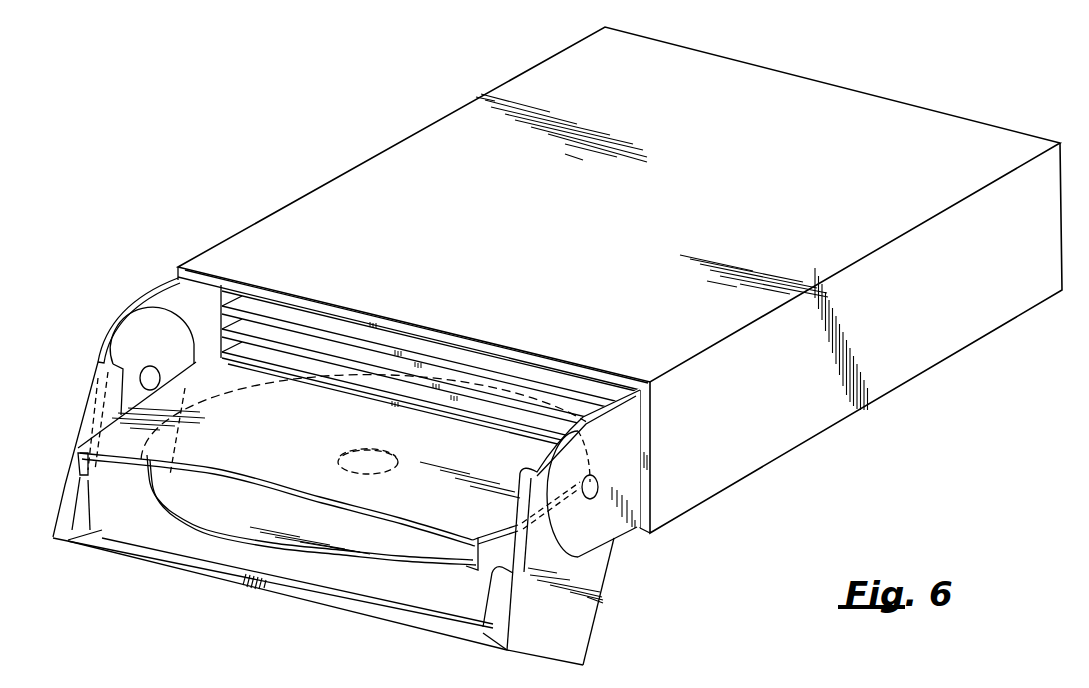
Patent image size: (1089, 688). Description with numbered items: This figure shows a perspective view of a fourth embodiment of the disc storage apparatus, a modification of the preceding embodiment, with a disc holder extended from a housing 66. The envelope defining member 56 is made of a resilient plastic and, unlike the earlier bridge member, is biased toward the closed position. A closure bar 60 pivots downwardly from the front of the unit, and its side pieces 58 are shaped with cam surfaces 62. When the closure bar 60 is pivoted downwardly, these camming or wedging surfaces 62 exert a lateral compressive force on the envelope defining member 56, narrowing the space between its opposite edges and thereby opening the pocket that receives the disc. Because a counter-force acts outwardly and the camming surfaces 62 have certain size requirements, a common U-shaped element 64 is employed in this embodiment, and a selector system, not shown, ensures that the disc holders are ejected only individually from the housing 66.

The disc holder frame 56 is at (478, 392).
The side arm 58 is at (90, 407).
The bottom plate 60 is at (228, 574).
The hook 62 is at (82, 530).
The front wall 64 is at (167, 296).
The housing 66 is at (768, 443).